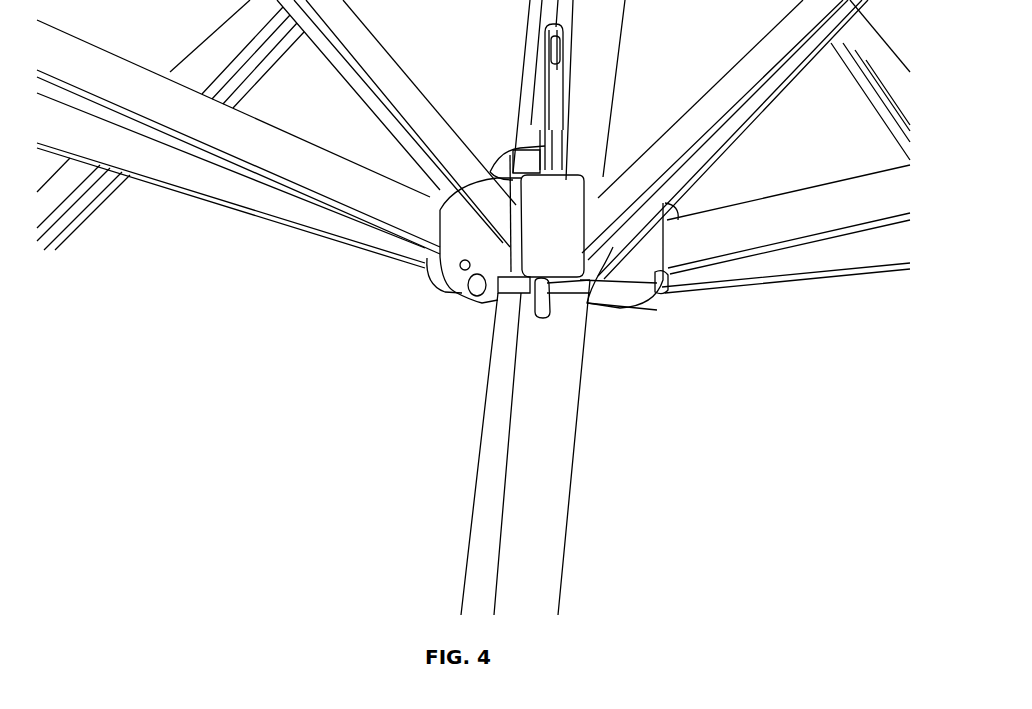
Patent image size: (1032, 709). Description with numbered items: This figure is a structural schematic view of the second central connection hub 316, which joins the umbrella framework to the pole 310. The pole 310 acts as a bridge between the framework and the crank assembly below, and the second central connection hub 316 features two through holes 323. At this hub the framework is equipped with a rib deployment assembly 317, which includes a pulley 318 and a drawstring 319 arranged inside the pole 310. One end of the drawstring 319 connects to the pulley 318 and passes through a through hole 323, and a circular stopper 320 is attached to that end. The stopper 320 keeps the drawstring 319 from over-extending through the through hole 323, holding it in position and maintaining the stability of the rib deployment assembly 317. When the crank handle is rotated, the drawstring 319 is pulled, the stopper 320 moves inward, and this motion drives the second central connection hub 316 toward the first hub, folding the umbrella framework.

The pole 310 is at (532, 465).
The second central connection hub 316 is at (496, 284).
The rib deployment assembly 317 is at (312, 255).
The pulley 318 is at (538, 44).
The drawstring 319 is at (538, 130).
The stopper 320 is at (543, 305).
The through hole 323 is at (583, 294).